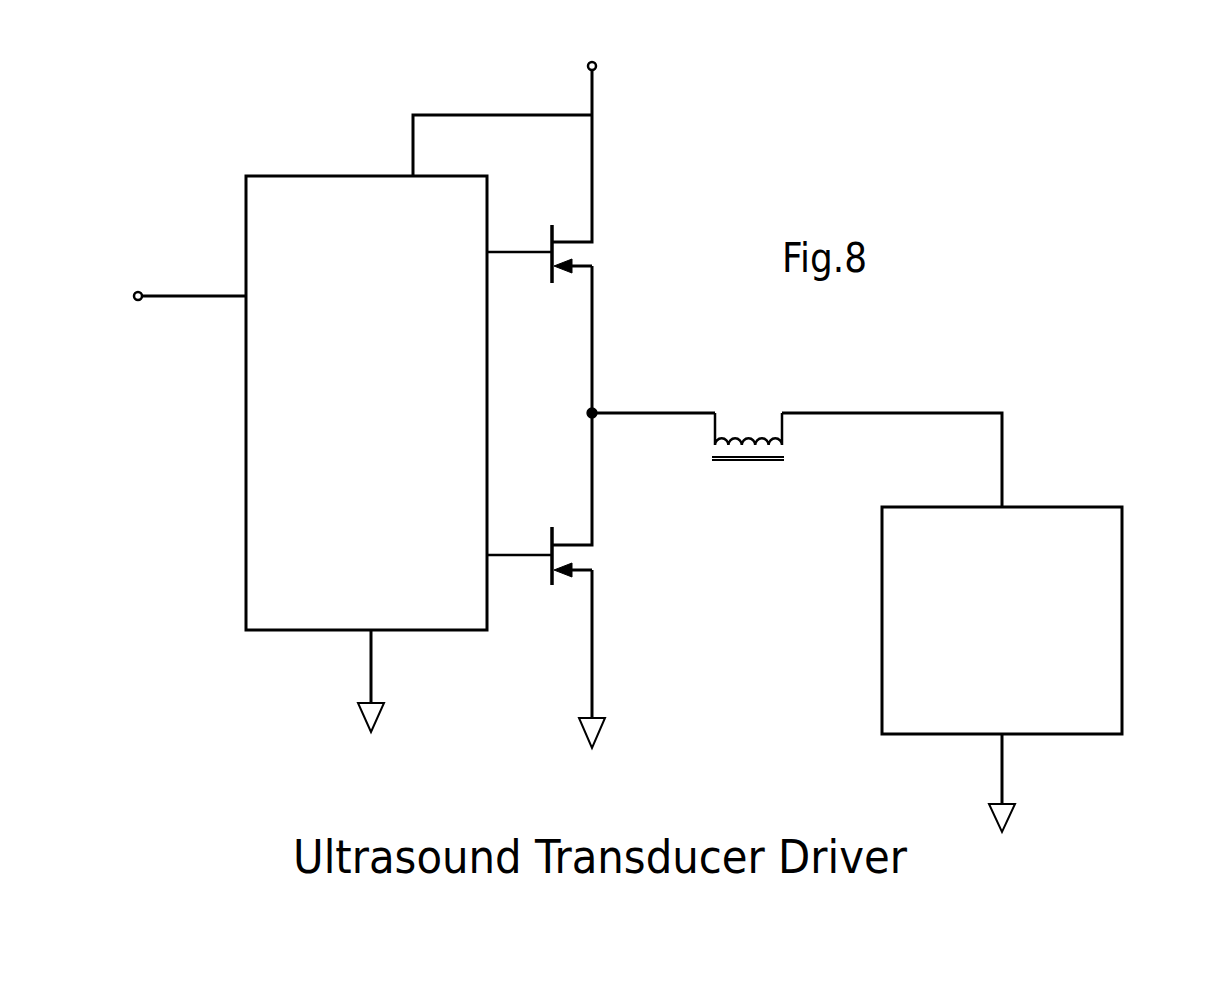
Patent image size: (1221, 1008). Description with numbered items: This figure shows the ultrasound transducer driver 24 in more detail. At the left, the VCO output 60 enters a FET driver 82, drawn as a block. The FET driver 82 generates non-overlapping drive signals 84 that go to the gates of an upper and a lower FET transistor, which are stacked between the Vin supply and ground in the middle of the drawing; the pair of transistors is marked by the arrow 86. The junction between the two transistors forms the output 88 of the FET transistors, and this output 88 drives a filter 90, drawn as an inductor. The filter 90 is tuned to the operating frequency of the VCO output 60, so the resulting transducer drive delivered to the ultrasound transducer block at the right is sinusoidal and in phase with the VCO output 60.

The ultrasound transducer driver 24 is at (1128, 242).
The VCO output 60 is at (208, 297).
The FET driver 82 is at (372, 461).
The drive signals 84 is at (535, 262).
The FET pair / half bridge 86 is at (617, 603).
The output 88 is at (665, 413).
The filter 90 is at (752, 423).